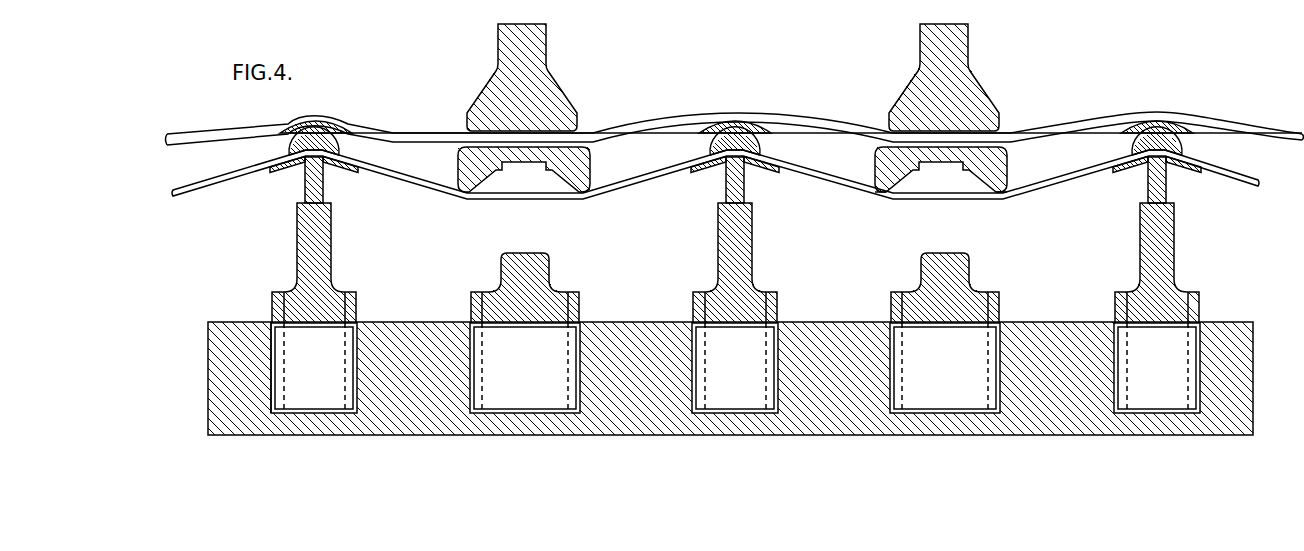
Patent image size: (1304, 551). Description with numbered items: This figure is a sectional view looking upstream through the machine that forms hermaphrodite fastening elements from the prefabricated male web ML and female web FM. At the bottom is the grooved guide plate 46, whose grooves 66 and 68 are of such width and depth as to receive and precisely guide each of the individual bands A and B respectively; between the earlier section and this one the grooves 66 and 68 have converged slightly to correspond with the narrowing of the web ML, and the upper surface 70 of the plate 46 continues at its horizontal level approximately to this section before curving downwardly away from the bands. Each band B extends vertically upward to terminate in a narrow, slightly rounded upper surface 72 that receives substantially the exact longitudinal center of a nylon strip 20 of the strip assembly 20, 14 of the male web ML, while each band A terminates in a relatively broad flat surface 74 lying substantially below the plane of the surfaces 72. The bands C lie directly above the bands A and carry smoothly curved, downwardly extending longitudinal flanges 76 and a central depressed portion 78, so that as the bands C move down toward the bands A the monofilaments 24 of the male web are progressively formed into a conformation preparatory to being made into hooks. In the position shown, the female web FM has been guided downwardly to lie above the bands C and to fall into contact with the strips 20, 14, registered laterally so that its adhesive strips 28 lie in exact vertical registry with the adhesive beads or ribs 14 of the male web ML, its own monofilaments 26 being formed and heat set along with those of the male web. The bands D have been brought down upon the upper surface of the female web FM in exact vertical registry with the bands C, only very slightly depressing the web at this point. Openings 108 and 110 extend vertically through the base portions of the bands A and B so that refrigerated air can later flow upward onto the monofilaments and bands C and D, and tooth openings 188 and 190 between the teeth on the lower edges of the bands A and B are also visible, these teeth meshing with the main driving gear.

The ribs 14 is at (333, 145).
The nylon strips 20 is at (350, 173).
The monofilaments 24 is at (715, 194).
The male web ML is at (648, 201).
The monofilaments 26 is at (735, 109).
The female web FM is at (817, 119).
The adhesive strips 28 is at (297, 118).
The grooved guide plate 46 is at (730, 350).
The upper surface 70 is at (833, 321).
The upper surfaces 72 is at (305, 178).
The bands B is at (331, 245).
The bands A is at (512, 262).
The flat surfaces 74 is at (745, 312).
The longitudinal flanges 76 is at (889, 193).
The central depressed portion 78 is at (523, 163).
The bands C is at (715, 170).
The bands D is at (491, 90).
The openings 108 is at (452, 2).
The openings 110 is at (275, 343).
The tooth openings 188 is at (527, 328).
The tooth openings 190 is at (320, 328).
The grooves 66 is at (580, 380).
The grooves 68 is at (358, 383).